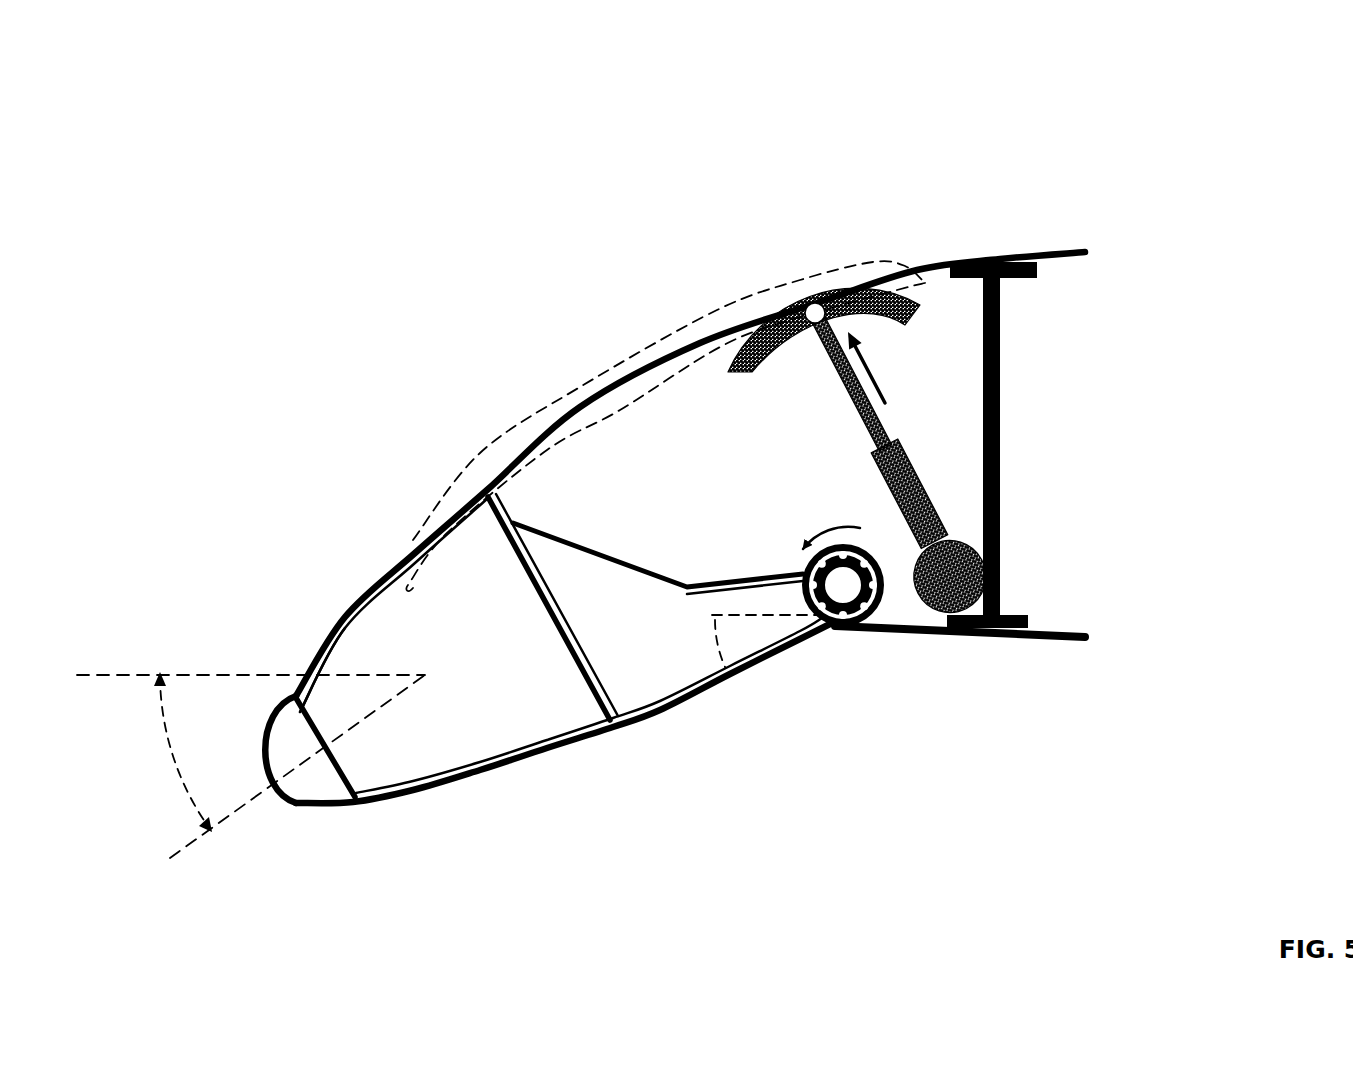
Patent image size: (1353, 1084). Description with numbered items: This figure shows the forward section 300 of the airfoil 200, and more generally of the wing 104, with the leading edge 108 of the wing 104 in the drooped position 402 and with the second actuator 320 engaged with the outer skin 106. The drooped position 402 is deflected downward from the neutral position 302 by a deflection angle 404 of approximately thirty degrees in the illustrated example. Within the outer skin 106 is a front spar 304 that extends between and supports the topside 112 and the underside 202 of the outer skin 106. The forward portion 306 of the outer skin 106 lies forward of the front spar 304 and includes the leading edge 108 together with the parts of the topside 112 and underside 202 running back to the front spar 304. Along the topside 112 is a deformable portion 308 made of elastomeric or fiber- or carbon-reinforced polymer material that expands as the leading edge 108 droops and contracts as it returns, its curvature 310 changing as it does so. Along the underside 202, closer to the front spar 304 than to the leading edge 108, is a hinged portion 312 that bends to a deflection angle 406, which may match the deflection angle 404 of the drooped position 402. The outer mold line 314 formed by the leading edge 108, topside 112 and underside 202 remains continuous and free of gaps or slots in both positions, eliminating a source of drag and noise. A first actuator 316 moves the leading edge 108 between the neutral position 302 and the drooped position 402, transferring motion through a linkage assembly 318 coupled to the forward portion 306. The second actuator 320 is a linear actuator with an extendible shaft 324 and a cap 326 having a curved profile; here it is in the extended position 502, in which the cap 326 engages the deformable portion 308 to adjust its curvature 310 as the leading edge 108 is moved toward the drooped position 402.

The forward section 300 is at (1058, 78).
The airfoil 200 is at (1058, 128).
The wing 104 is at (1058, 177).
The deformable portion 308 is at (800, 275).
The curvature 310 is at (668, 352).
The topside 112 is at (580, 403).
The cap 326 is at (740, 373).
The extended position 502 is at (808, 364).
The extendible shaft 324 is at (883, 418).
The front spar 304 is at (1002, 400).
The outer mold line 314 is at (340, 618).
The neutral position 302 is at (108, 675).
The outer skin 106 is at (277, 713).
The deflection angle 404 is at (150, 777).
The drooped position 402 is at (215, 823).
The leading edge 108 is at (272, 778).
The linkage assembly 318 is at (578, 667).
The underside 202 is at (537, 765).
The deflection angle 406 is at (717, 640).
The first actuator 316 is at (801, 593).
The hinged portion 312 is at (824, 630).
The second actuator 320 is at (910, 556).
The forward portion 306 is at (920, 632).